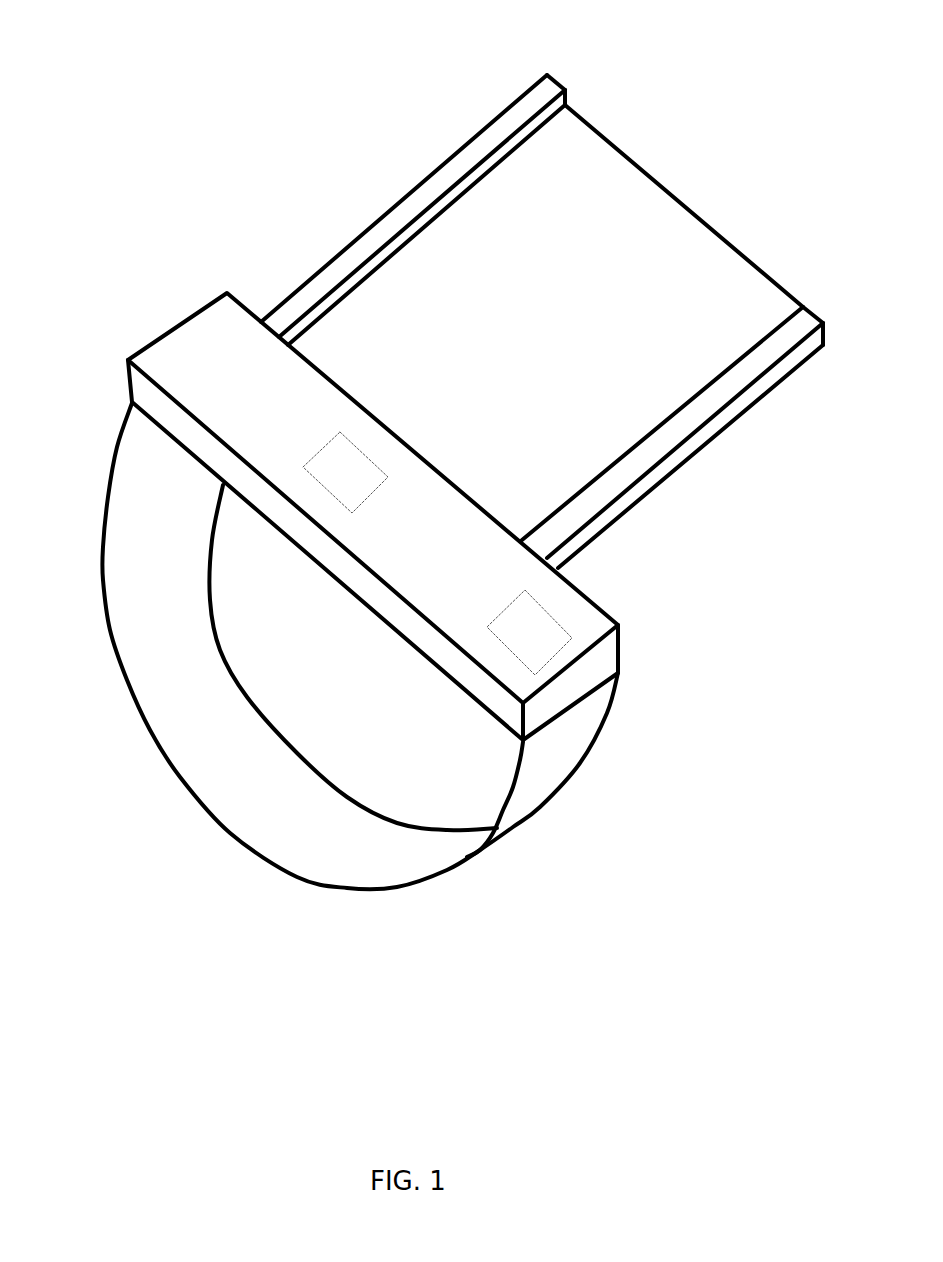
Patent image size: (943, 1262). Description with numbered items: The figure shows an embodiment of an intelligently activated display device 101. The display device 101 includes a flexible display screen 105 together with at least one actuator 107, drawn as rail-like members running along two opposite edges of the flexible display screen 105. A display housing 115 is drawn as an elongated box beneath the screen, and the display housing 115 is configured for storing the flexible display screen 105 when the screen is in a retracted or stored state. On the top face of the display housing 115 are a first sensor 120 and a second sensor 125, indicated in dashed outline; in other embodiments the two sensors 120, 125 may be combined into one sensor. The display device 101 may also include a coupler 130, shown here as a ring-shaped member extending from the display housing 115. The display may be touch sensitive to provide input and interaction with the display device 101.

The display device 101 is at (136, 142).
The flexible display screen 105 is at (523, 372).
The actuator 107 is at (566, 89).
The display housing 115 is at (622, 652).
The first sensor 120 is at (322, 450).
The second sensor 125 is at (506, 610).
The coupler 130 is at (142, 712).